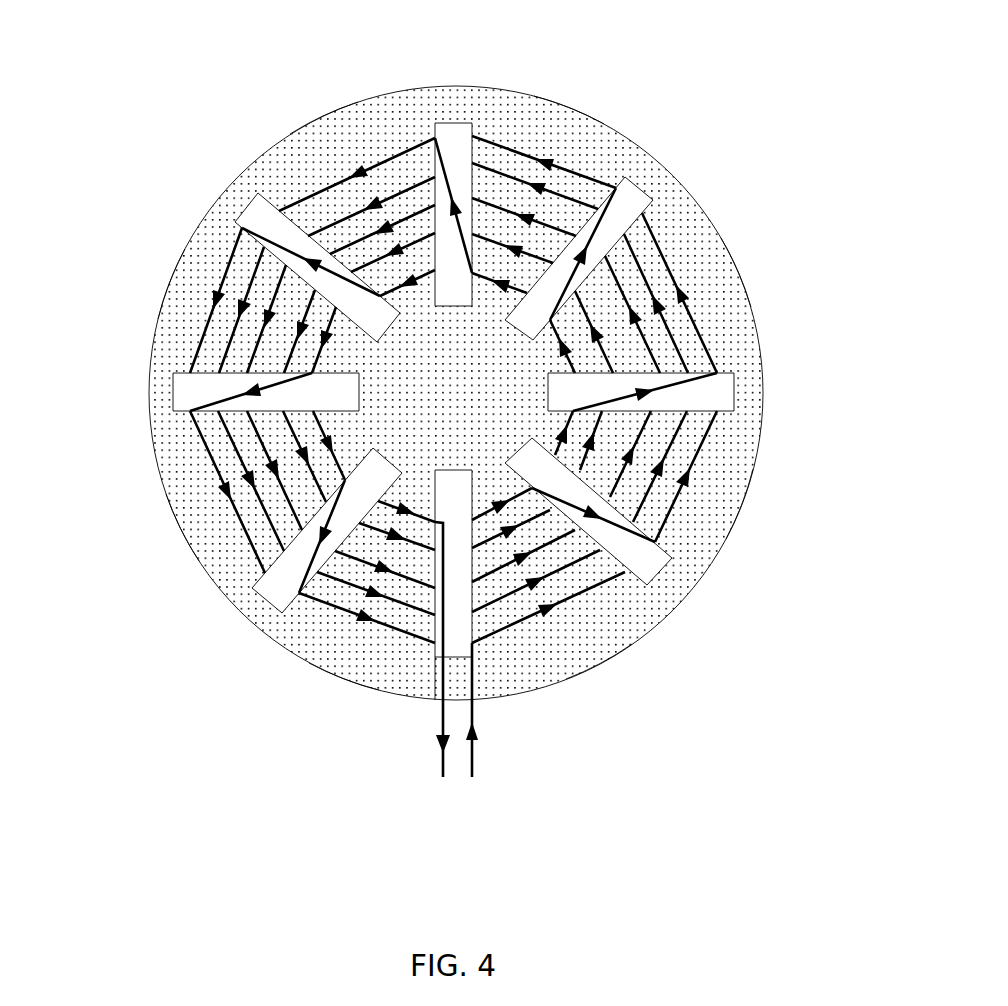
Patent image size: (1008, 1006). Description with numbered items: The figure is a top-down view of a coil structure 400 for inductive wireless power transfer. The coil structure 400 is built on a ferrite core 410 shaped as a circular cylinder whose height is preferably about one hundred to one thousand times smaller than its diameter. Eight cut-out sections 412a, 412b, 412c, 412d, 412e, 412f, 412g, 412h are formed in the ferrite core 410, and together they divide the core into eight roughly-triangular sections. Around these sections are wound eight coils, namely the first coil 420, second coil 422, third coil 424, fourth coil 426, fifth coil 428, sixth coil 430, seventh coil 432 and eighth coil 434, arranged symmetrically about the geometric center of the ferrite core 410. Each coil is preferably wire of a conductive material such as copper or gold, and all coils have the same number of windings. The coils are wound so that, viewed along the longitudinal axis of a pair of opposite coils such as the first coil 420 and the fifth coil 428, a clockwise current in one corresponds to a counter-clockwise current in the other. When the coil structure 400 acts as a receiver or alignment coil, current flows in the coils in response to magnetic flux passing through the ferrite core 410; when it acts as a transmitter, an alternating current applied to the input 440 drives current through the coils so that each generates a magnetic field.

The coil structure 400 is at (182, 800).
The ferrite core 410 is at (500, 697).
The cut-out section 412a is at (650, 568).
The cut-out section 412b is at (717, 398).
The cut-out section 412c is at (632, 203).
The cut-out section 412d is at (452, 138).
The cut-out section 412e is at (255, 222).
The cut-out section 412f is at (190, 390).
The cut-out section 412g is at (275, 587).
The cut-out section 412h is at (455, 494).
The first coil 420 is at (608, 678).
The second coil 422 is at (768, 515).
The third coil 424 is at (760, 262).
The fourth coil 426 is at (575, 90).
The fifth coil 428 is at (313, 100).
The sixth coil 430 is at (148, 275).
The seventh coil 432 is at (162, 538).
The eighth coil 434 is at (335, 700).
The input 440 is at (455, 800).